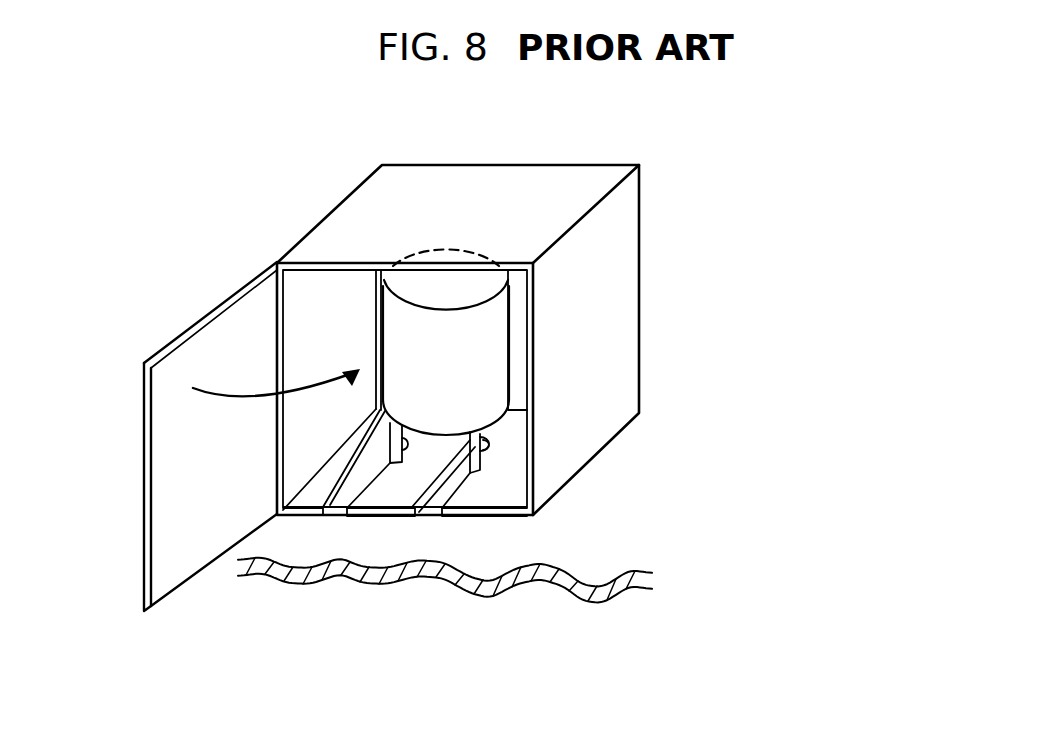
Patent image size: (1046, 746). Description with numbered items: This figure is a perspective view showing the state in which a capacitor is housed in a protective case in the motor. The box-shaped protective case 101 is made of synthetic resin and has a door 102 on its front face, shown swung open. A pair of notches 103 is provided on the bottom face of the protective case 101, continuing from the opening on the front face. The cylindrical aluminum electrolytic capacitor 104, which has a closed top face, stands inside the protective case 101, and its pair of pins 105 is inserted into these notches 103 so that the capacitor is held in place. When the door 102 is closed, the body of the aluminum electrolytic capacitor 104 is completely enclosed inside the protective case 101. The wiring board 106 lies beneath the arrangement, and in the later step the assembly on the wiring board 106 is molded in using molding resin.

The protective case 101 is at (535, 148).
The door 102 is at (213, 346).
The notches 103 is at (337, 497).
The aluminum electrolytic capacitor 104 is at (486, 365).
The pins 105 is at (397, 438).
The wiring board 106 is at (590, 547).